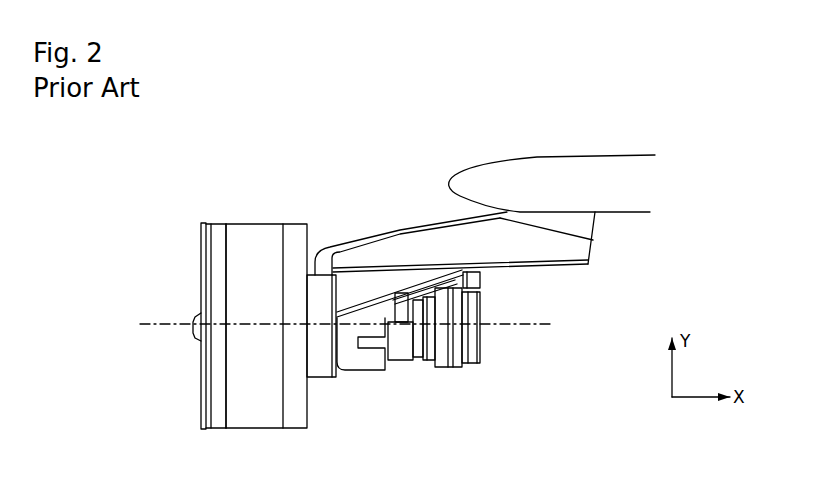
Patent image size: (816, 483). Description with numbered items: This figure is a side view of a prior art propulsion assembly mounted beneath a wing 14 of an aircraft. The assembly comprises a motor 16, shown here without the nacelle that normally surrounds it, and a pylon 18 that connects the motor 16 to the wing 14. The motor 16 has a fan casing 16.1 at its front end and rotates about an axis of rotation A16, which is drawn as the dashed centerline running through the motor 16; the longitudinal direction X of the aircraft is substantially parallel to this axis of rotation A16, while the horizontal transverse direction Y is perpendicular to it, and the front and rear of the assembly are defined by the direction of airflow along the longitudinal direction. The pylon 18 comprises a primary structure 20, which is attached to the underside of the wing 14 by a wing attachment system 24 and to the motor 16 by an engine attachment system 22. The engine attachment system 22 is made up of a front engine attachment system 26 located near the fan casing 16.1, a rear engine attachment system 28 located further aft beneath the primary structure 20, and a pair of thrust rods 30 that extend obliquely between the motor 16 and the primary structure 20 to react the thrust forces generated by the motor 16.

The wing 14 is at (538, 160).
The motor 16 is at (190, 362).
The fan casing 16.1 is at (237, 242).
The axis of rotation A16 is at (177, 327).
The pylon 18 is at (336, 208).
The primary structure 20 is at (434, 237).
The engine attachment system 22 is at (487, 288).
The wing attachment system 24 is at (623, 241).
The front engine attachment system 26 is at (307, 271).
The rear engine attachment system 28 is at (485, 277).
The thrust rods 30 is at (402, 272).